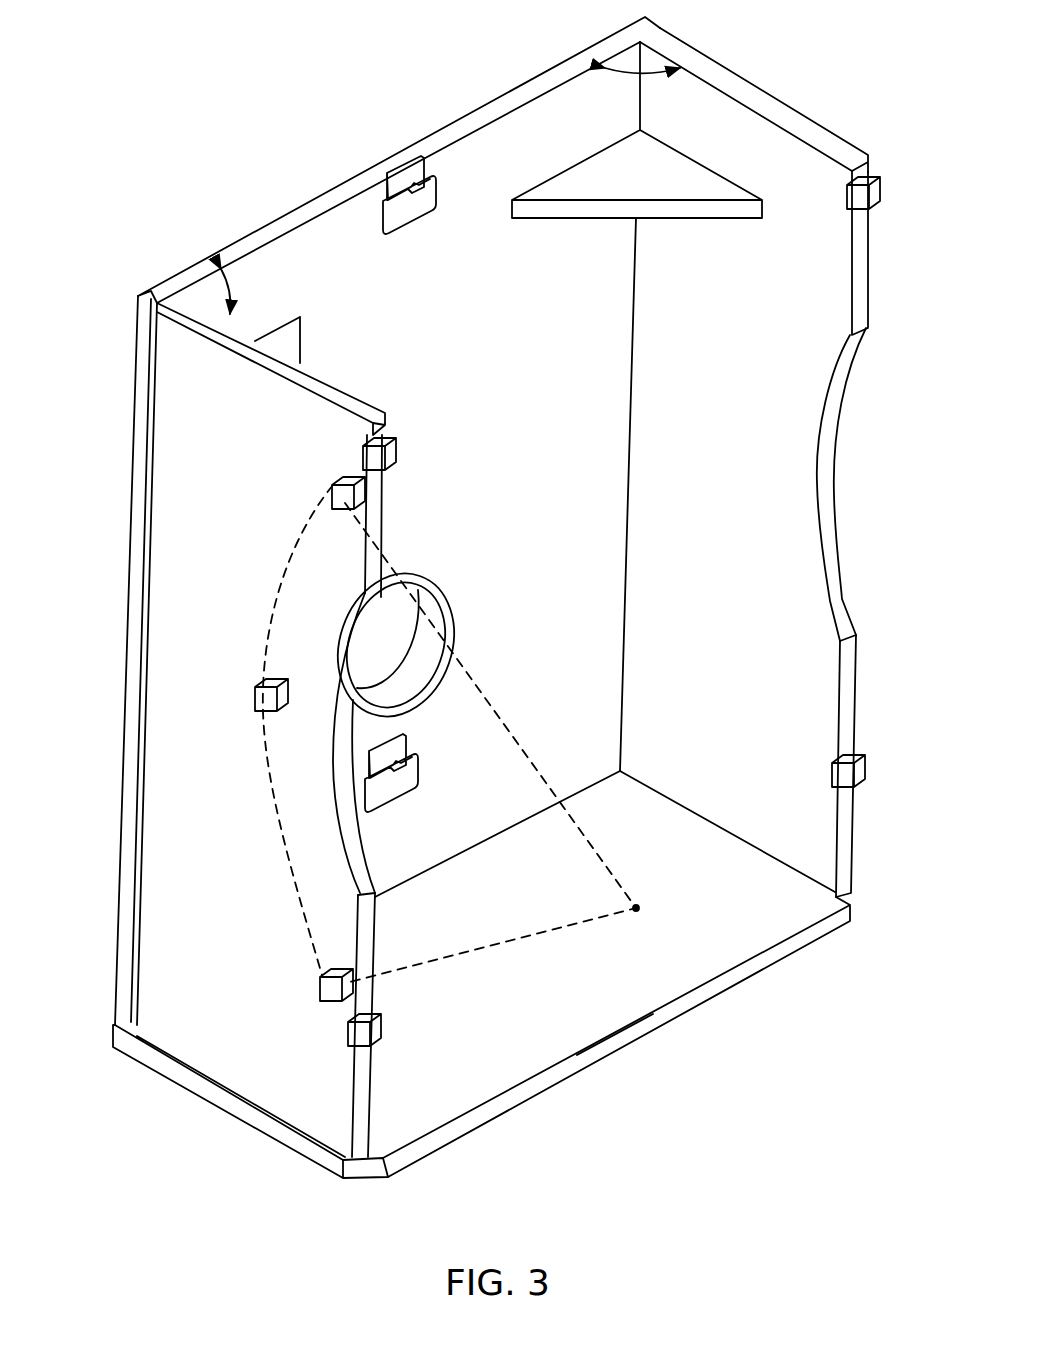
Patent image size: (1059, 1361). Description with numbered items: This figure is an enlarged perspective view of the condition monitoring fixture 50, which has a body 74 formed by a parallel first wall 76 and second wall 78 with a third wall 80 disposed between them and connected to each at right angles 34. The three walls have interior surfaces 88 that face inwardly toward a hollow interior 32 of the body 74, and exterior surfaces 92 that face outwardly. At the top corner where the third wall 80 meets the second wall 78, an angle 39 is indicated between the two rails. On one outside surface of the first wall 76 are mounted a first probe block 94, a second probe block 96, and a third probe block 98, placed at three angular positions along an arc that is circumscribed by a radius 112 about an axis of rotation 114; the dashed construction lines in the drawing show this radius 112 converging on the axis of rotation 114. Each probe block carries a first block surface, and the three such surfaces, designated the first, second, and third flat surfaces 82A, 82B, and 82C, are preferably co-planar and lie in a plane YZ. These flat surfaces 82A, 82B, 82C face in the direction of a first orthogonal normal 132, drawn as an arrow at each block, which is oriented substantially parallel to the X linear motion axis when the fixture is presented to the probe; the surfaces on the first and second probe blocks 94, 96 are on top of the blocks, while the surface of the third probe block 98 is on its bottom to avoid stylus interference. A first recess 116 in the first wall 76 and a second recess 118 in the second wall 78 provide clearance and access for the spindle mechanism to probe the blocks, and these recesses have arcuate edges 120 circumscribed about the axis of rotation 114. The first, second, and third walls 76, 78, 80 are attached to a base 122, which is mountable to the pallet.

The hollow interior 32 is at (596, 449).
The right angles 34 is at (240, 293).
The angle at top corner 39 is at (623, 76).
The monitoring fixture 50 is at (729, 1121).
The body 74 is at (158, 955).
The first wall 76 is at (312, 377).
The second wall 78 is at (712, 62).
The third wall 80 is at (295, 215).
The first flat surface 82A is at (323, 985).
The second flat surface 82B is at (255, 700).
The third flat surface 82C is at (336, 492).
The interior surfaces 88 is at (818, 272).
The exterior surfaces 92 is at (172, 418).
The first probe block 94 is at (347, 987).
The second probe block 96 is at (280, 718).
The third probe block 98 is at (358, 498).
The radius 112 is at (508, 728).
The axis of rotation 114 is at (636, 906).
The first recess 116 is at (373, 880).
The second recess 118 is at (836, 442).
The arcuate edges 120 is at (845, 598).
The base 122 is at (170, 1074).
The first orthogonal normal 132 is at (338, 492).
The plane YZ is at (585, 840).